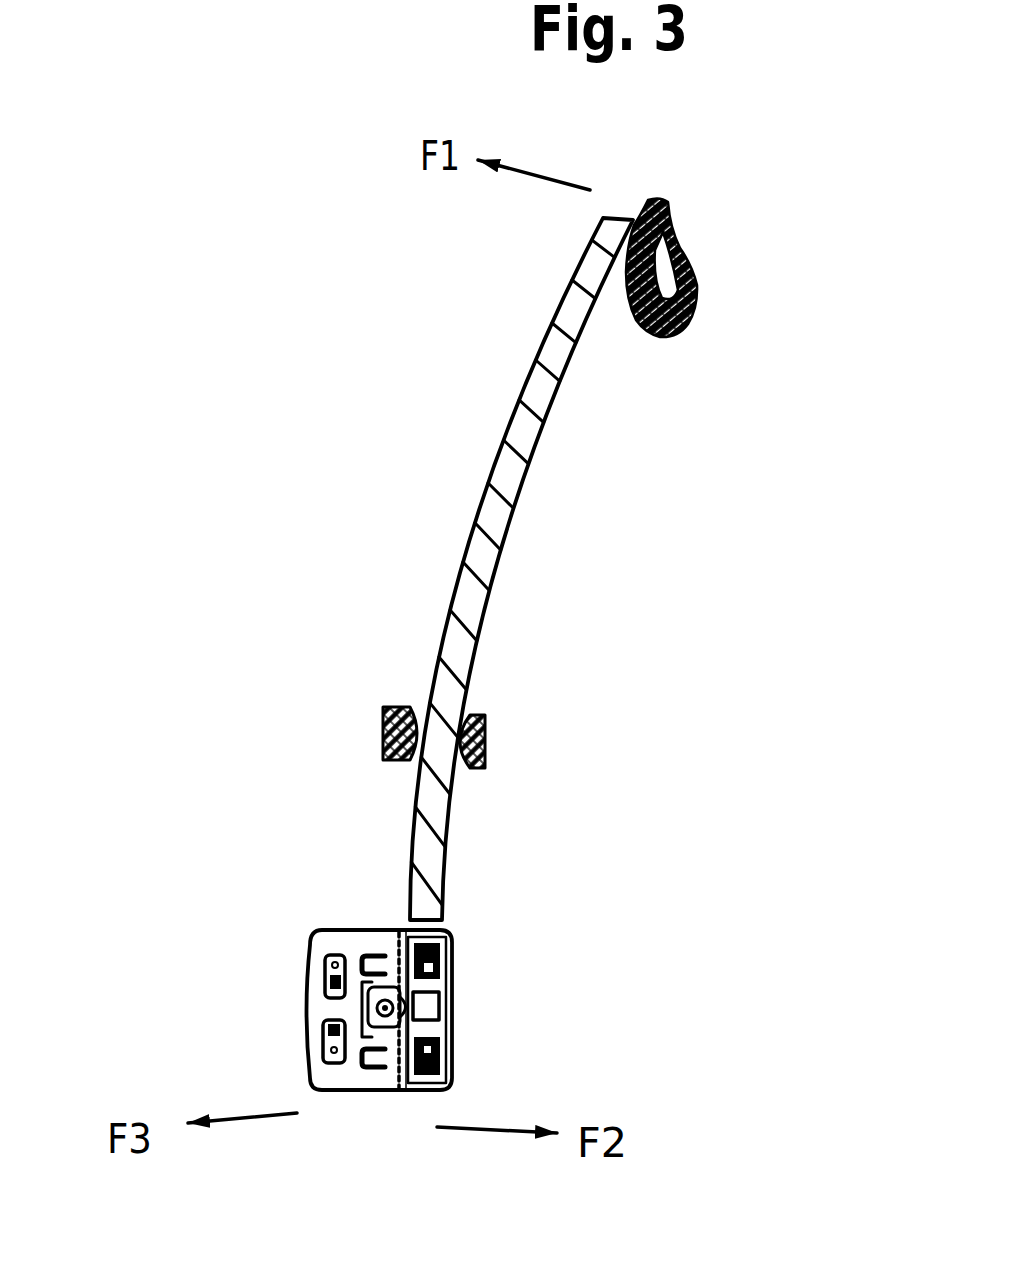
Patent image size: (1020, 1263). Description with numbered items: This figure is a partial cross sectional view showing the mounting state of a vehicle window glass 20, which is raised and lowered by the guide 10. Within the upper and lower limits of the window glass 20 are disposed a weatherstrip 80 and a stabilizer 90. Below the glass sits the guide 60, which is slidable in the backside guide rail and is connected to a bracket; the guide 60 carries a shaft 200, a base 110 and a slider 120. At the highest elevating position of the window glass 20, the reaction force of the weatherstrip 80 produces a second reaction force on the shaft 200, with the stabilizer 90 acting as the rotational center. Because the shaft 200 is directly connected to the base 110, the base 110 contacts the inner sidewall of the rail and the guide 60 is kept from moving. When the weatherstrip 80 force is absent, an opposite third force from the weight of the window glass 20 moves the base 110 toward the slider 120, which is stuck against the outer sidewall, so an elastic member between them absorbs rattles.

The guide 10 is at (262, 260).
The window glass 20 is at (480, 524).
The guide 60 is at (302, 922).
The weatherstrip 80 is at (690, 305).
The stabilizer 90 is at (383, 727).
The base 110 is at (447, 1062).
The slider 120 is at (343, 1077).
The shaft 200 is at (347, 1020).